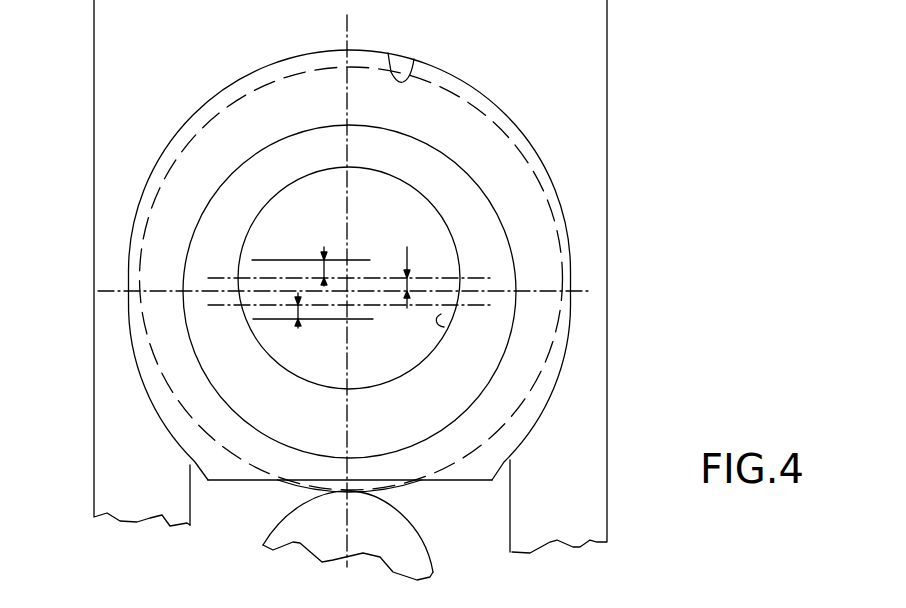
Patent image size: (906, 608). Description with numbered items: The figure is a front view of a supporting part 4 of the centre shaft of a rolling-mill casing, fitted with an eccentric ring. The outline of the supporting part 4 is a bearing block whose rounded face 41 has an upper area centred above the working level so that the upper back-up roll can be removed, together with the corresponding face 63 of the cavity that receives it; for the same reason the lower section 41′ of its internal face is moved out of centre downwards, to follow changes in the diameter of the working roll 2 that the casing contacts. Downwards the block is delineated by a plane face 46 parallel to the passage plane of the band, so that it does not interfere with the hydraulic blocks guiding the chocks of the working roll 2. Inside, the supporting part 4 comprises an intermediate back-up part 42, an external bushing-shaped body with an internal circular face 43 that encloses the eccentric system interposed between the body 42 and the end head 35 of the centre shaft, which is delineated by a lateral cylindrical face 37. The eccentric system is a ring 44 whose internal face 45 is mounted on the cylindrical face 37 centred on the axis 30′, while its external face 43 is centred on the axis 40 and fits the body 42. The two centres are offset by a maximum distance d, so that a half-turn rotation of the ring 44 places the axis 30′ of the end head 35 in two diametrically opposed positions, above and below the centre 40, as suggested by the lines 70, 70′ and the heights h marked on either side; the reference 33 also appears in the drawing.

The working roll 2 is at (412, 547).
The supporting part 4 is at (573, 245).
The axis of the end head 30′ is at (350, 290).
The pitch circle 33 is at (483, 112).
The end head of the centre shaft 35 is at (337, 192).
The lateral cylindrical face 37 is at (448, 222).
The axis of the internal circular face 40 is at (349, 295).
The rounded face 41 is at (463, 78).
The lower section of the internal face 41′ is at (512, 476).
The intermediate back-up part 42 is at (537, 218).
The internal circular face 43 is at (476, 394).
The ring 44 is at (497, 265).
The internal face of the ring 45 is at (444, 327).
The plane face 46 is at (233, 478).
The face of the cavity 63 is at (414, 56).
The upper contact line 70 is at (349, 262).
The lower contact line 70′ is at (348, 320).
The offset height h is at (324, 266).
The distance d is at (414, 277).